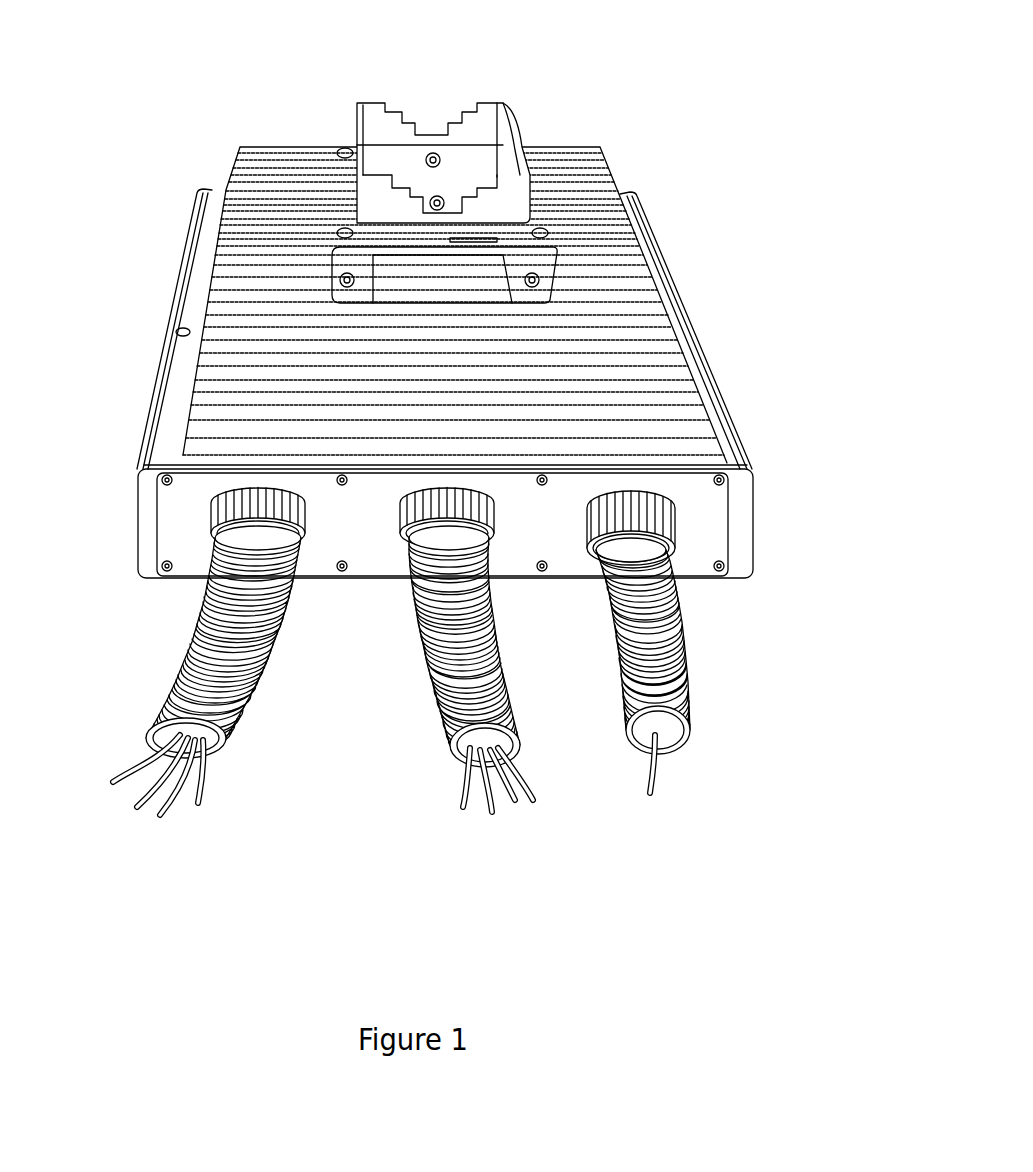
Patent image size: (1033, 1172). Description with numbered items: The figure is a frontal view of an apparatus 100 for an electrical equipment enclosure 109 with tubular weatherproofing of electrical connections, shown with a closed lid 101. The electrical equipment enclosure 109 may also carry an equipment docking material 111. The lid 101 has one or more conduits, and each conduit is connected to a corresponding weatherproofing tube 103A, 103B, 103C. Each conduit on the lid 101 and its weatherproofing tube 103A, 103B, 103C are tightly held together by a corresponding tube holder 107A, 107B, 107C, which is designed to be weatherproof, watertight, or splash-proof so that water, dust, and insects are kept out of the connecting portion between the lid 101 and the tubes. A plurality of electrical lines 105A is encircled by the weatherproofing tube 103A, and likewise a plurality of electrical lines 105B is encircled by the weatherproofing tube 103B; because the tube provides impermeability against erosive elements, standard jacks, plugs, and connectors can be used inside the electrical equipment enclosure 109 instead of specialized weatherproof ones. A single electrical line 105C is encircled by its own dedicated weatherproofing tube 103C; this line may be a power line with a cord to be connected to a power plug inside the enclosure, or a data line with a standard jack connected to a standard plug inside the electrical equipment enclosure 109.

The apparatus 100 is at (422, 939).
The lid 101 is at (187, 527).
The weatherproofing tube 103A is at (178, 682).
The weatherproofing tube 103B is at (437, 702).
The weatherproofing tube 103C is at (690, 702).
The electrical lines 105A is at (202, 795).
The electrical lines 105B is at (468, 794).
The single electrical line 105C is at (668, 785).
The tube holder 107A is at (302, 538).
The tube holder 107B is at (490, 538).
The tube holder 107C is at (667, 527).
The electrical equipment enclosure 109 is at (617, 359).
The equipment docking material 111 is at (515, 139).